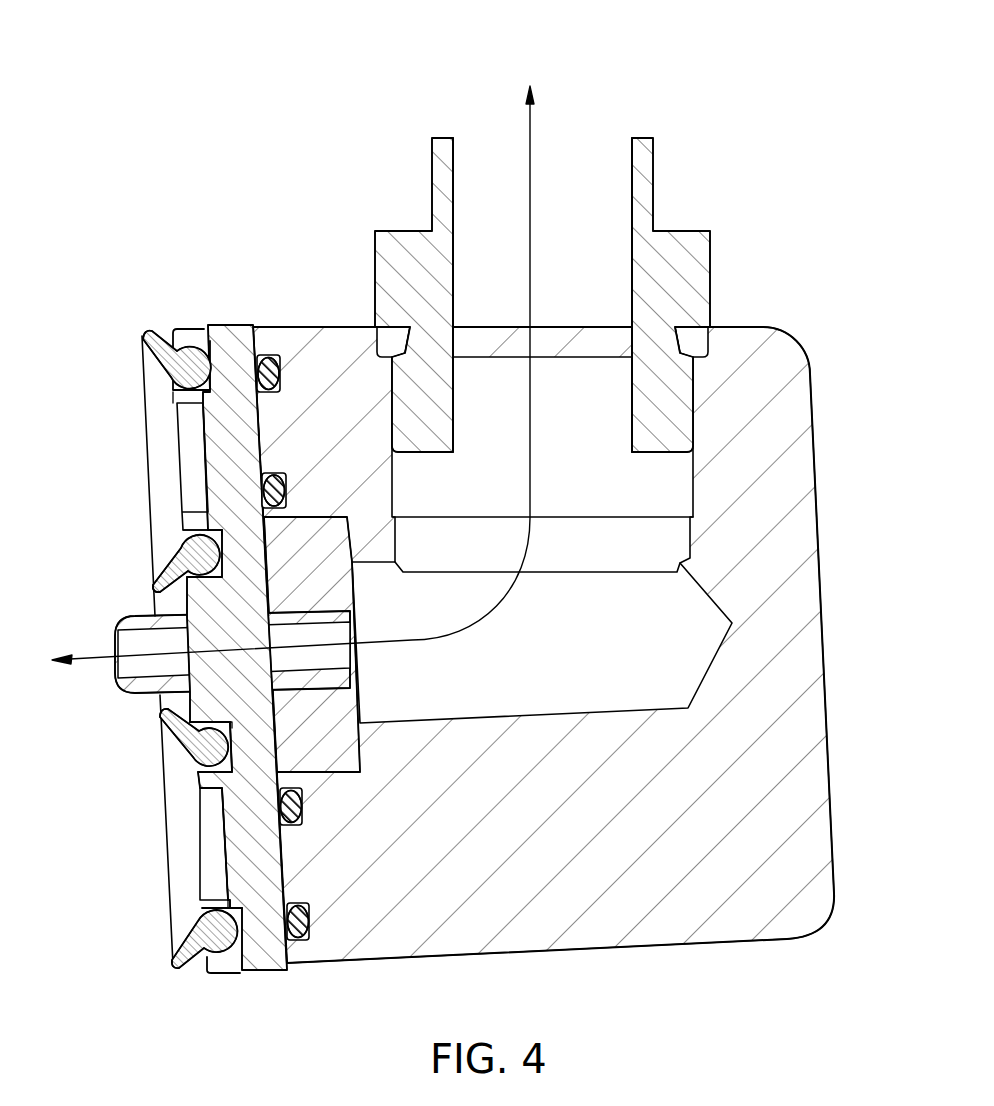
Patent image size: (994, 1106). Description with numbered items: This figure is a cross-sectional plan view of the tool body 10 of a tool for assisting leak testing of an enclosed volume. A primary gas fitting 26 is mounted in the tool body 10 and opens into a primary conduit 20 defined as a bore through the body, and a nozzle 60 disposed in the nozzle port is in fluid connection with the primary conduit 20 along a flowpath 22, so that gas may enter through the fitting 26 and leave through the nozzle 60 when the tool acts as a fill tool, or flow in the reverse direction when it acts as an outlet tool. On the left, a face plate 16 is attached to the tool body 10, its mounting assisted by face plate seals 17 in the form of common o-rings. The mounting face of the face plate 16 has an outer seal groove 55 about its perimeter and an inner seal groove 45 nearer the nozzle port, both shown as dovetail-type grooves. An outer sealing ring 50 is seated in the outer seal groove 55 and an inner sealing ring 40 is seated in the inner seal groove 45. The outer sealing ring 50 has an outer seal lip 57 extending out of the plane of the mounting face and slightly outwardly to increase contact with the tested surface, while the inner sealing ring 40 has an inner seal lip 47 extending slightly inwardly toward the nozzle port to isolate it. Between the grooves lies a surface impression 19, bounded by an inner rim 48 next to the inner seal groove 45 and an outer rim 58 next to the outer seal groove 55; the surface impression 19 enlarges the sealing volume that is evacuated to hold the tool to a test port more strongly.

The tool body 10 is at (790, 99).
The face plate 16 is at (273, 940).
The face plate seals 17 is at (282, 377).
The surface impression 19 is at (190, 432).
The primary conduit 20 is at (622, 643).
The flowpath 22 is at (530, 190).
The primary gas fitting 26 is at (400, 252).
The inner sealing ring 40 is at (190, 555).
The inner seal groove 45 is at (188, 525).
The inner seal lip 47 is at (158, 586).
The inner rim 48 is at (207, 532).
The outer sealing ring 50 is at (187, 368).
The outer seal groove 55 is at (207, 341).
The outer seal lip 57 is at (180, 840).
The outer rim 58 is at (180, 397).
The nozzle 60 is at (338, 686).